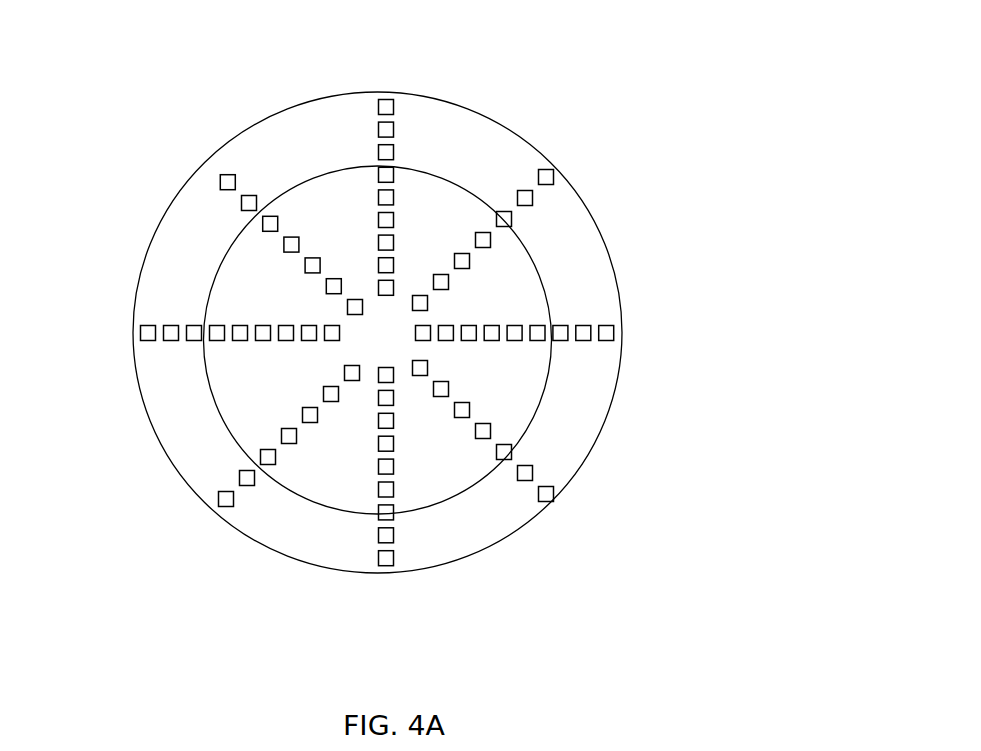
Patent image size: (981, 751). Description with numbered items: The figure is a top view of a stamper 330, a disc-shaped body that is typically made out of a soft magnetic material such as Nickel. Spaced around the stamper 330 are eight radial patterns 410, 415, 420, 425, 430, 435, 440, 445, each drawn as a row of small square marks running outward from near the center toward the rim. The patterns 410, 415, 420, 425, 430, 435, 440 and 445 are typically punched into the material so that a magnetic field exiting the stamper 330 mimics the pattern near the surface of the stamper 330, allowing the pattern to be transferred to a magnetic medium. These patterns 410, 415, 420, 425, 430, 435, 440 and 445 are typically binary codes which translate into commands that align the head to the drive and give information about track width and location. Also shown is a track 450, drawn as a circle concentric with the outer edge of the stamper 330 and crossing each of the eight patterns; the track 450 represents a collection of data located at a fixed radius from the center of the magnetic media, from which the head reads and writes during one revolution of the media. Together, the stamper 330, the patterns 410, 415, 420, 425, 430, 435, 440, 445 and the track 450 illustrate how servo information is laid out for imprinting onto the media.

The stamper 330 is at (614, 266).
The track 450 is at (436, 175).
The pattern 410 is at (385, 96).
The pattern 415 is at (548, 168).
The pattern 420 is at (614, 330).
The pattern 425 is at (548, 500).
The pattern 430 is at (384, 566).
The pattern 435 is at (218, 508).
The pattern 440 is at (134, 342).
The pattern 445 is at (213, 168).